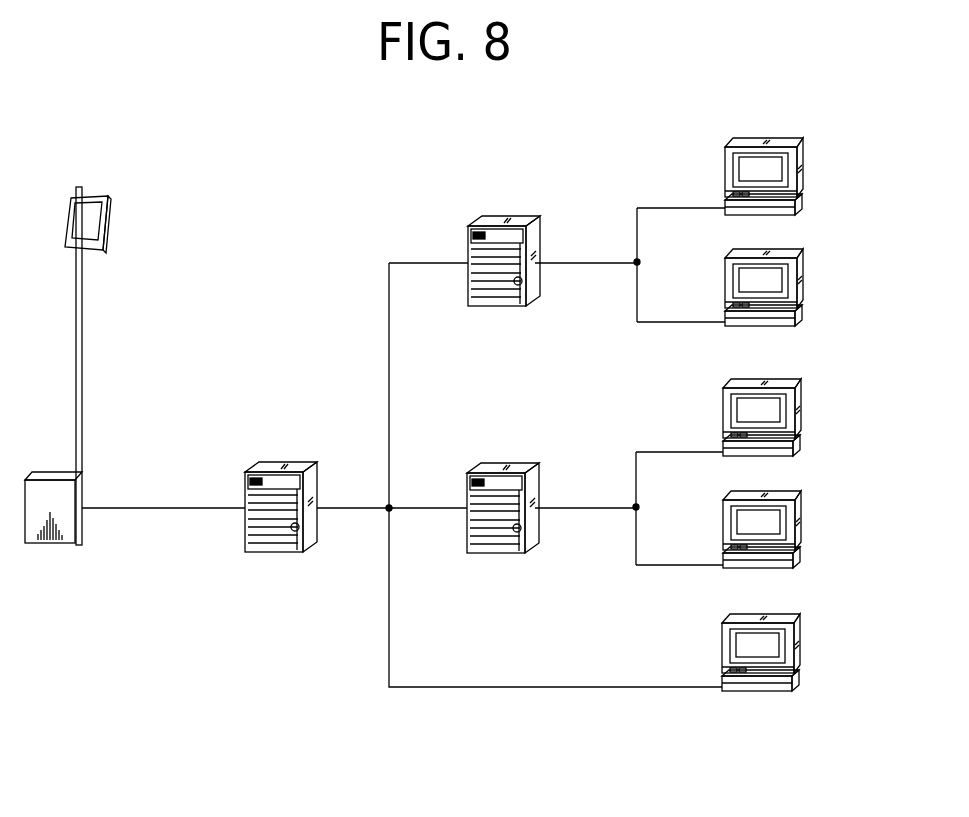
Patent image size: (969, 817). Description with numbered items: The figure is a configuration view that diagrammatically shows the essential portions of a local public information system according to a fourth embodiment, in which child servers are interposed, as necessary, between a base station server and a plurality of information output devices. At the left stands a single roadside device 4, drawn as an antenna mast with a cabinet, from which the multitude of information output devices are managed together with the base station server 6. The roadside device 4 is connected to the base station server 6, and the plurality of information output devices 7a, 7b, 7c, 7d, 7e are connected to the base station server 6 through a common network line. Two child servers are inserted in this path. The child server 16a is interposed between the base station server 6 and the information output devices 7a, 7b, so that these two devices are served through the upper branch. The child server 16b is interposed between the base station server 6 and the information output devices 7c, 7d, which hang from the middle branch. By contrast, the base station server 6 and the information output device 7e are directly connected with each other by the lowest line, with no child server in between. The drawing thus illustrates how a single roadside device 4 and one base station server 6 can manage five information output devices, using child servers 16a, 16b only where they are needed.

The roadside device 4 is at (48, 545).
The base station server 6 is at (274, 552).
The child server 16a is at (496, 305).
The child server 16b is at (495, 552).
The information output device 7a is at (803, 157).
The information output device 7b is at (803, 268).
The information output device 7c is at (801, 398).
The information output device 7d is at (801, 510).
The information output device 7e is at (800, 633).